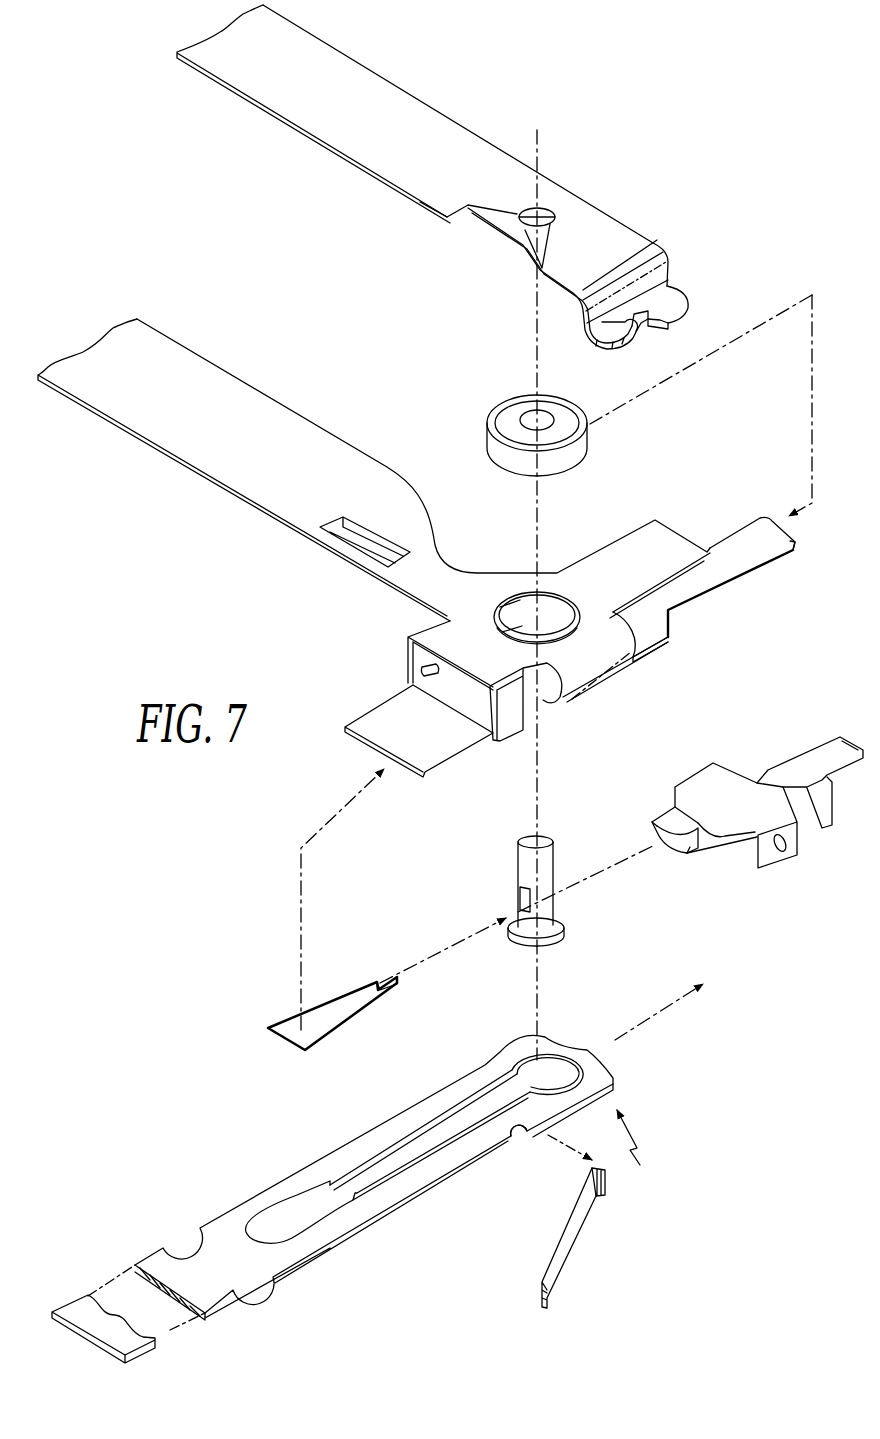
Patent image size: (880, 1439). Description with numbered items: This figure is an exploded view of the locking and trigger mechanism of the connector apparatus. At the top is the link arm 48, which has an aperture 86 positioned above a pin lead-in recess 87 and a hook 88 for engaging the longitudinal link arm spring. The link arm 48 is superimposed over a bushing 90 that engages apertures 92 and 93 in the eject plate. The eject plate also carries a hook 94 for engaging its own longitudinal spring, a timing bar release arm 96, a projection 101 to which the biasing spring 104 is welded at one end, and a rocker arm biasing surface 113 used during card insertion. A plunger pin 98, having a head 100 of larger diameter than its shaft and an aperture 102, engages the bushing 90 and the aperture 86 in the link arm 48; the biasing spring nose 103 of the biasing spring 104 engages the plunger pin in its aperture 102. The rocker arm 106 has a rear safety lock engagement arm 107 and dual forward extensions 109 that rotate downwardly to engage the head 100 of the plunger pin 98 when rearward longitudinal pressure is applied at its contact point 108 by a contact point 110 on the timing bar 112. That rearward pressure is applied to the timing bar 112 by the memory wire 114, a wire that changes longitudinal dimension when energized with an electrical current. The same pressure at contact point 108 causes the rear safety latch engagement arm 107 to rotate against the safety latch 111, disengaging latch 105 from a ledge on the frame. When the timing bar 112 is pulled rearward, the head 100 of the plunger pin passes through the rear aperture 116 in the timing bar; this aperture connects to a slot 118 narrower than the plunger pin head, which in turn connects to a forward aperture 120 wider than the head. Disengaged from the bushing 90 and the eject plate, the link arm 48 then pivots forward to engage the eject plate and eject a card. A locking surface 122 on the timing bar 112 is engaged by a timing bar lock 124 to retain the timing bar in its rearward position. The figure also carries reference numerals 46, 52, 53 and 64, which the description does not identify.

The lower arm plate 46 is at (424, 545).
The link arm 48 is at (464, 185).
The mounting bracket 52 is at (554, 258).
The hinge assembly 53 is at (585, 258).
The slot 64 is at (345, 522).
The aperture 86 is at (560, 210).
The pin lead-in recess 87 is at (500, 238).
The hook 88 is at (633, 332).
The bushing 90 is at (492, 447).
The aperture 92 is at (531, 587).
The aperture 93 is at (520, 600).
The hook 94 is at (432, 676).
The timing bar release arm 96 is at (493, 713).
The plunger pin 98 is at (503, 908).
The head 100 is at (512, 932).
The projection 101 is at (398, 716).
The aperture 102 is at (520, 898).
The biasing spring nose 103 is at (388, 976).
The biasing spring 104 is at (317, 988).
The latch 105 is at (790, 551).
The rocker arm 106 is at (783, 858).
The rear safety lock engagement arm 107 is at (757, 799).
The contact point 108 is at (822, 832).
The dual forward extensions 109 is at (687, 858).
The contact point 110 is at (371, 1177).
The safety latch 111 is at (716, 594).
The timing bar 112 is at (640, 1148).
The rocker arm biasing surface 113 is at (662, 650).
The memory wire 114 is at (650, 1005).
The rear aperture 116 is at (525, 1065).
The slot 118 is at (376, 1156).
The forward aperture 120 is at (288, 1207).
The locking surface 122 is at (512, 1137).
The timing bar lock 124 is at (578, 1222).